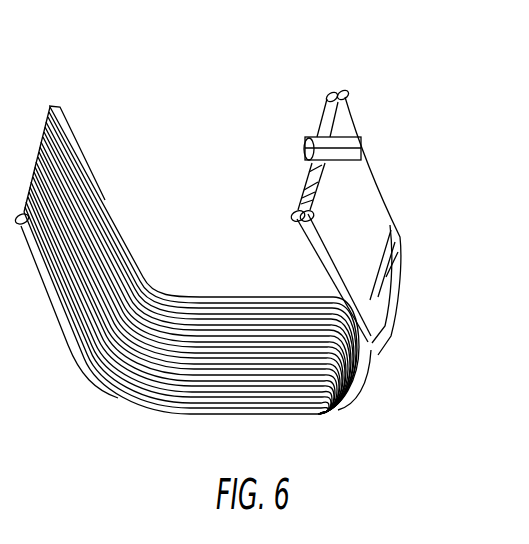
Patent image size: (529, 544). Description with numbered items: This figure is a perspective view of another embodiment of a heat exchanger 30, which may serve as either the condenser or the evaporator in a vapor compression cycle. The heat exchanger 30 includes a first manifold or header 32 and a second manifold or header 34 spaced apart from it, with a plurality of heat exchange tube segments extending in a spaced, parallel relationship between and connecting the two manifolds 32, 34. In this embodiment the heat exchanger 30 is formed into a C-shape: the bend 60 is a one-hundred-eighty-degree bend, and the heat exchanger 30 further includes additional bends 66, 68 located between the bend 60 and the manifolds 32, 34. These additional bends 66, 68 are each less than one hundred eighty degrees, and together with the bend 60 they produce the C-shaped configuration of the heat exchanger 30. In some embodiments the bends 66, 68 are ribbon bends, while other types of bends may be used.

The heat exchanger 30 is at (452, 121).
The first manifold or header 32 is at (340, 92).
The second manifold or header 34 is at (322, 117).
The bend 60 is at (48, 107).
The additional bend 66 is at (117, 393).
The additional bend 68 is at (348, 395).